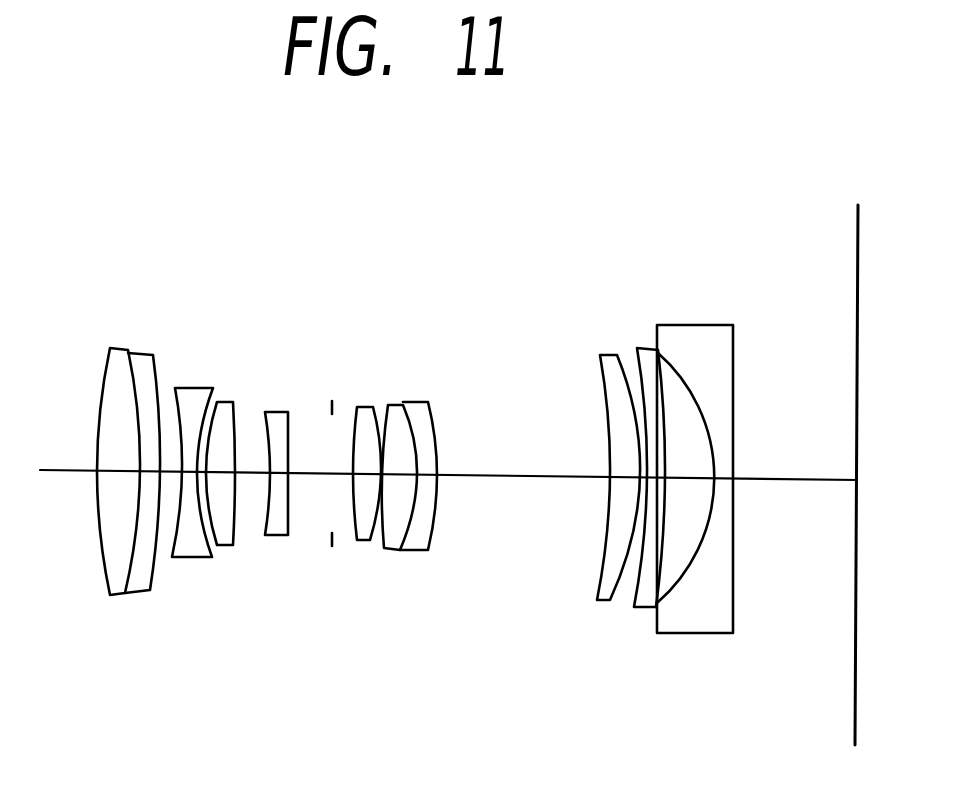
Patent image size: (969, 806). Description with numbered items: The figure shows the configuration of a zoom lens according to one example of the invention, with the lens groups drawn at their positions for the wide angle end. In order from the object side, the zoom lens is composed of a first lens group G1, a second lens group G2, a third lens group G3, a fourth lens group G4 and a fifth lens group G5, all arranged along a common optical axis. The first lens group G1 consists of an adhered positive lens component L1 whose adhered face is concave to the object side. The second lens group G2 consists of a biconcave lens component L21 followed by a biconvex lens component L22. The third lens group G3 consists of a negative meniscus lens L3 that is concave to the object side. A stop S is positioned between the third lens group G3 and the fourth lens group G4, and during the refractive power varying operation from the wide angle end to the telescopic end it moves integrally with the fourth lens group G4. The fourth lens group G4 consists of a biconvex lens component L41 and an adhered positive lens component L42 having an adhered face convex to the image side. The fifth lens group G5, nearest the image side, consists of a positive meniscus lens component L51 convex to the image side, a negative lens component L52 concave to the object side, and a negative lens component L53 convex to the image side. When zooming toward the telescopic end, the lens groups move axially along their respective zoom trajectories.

The adhered positive lens component L1 is at (119, 348).
The biconcave lens component L21 is at (187, 388).
The biconvex lens component L22 is at (228, 402).
The negative meniscus lens L3 is at (278, 412).
The stop S is at (332, 416).
The biconvex lens component L41 is at (367, 405).
The adhered positive lens component L42 is at (413, 402).
The positive meniscus lens component L51 is at (604, 355).
The negative lens component L52 is at (647, 348).
The negative lens component L53 is at (708, 325).
The first lens group G1 is at (106, 479).
The second lens group G2 is at (175, 475).
The third lens group G3 is at (271, 506).
The fourth lens group G4 is at (396, 482).
The fifth lens group G5 is at (650, 494).